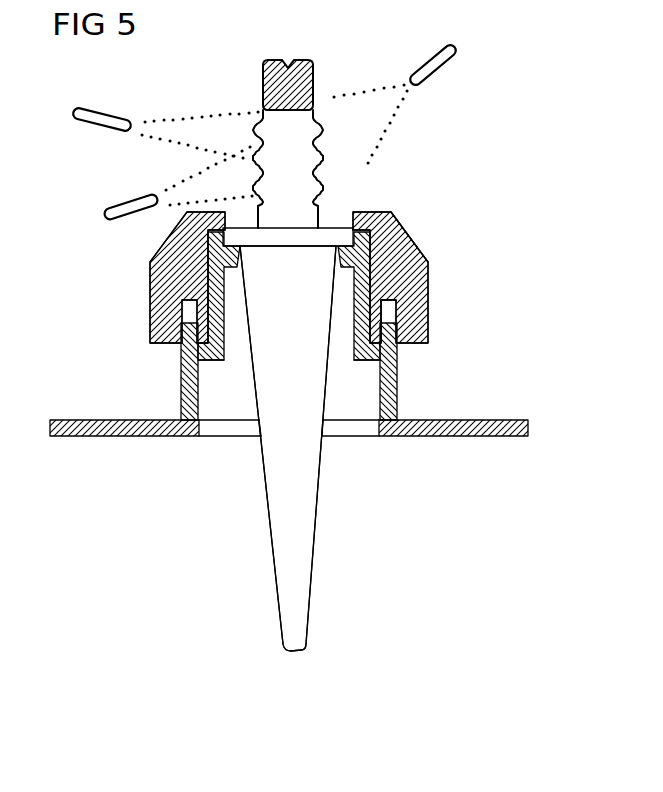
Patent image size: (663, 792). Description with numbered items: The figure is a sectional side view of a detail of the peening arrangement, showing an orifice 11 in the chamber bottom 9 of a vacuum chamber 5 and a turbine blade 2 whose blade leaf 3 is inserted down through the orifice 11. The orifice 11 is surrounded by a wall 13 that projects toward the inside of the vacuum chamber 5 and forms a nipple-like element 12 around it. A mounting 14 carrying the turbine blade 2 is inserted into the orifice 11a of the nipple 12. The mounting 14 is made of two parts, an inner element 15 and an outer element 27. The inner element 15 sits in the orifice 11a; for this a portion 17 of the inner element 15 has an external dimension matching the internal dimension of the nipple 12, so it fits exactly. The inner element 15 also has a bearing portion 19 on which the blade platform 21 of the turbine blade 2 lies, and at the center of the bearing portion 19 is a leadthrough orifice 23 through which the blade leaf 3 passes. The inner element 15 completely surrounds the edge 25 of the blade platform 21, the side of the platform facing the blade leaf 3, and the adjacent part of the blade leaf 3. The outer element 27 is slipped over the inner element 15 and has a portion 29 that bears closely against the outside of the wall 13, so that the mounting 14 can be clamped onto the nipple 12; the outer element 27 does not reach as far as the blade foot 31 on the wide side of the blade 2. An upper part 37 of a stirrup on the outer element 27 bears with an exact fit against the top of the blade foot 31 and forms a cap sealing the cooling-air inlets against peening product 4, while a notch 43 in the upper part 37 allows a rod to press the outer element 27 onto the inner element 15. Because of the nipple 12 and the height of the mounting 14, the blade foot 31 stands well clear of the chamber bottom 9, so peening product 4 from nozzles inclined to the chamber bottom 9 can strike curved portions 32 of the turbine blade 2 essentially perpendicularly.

The turbine blade 2 is at (343, 503).
The blade leaf 3 is at (303, 560).
The peening product 4 is at (187, 121).
The vacuum chamber 5 is at (432, 151).
The chamber bottom 9 is at (119, 437).
The orifice 11 is at (214, 431).
The orifice of the nipple 11a is at (362, 361).
The nipple-like element 12 is at (168, 377).
The wall 13 is at (398, 382).
The mounting 14 is at (453, 323).
The inner element 15 is at (366, 310).
The portion of the inner element 17 is at (211, 352).
The bearing portion 19 is at (404, 225).
The blade platform 21 is at (336, 227).
The leadthrough orifice 23 is at (284, 260).
The edge of the blade platform 25 is at (157, 256).
The outer element 27 is at (420, 276).
The portion of the outer element 29 is at (414, 345).
The blade foot 31 is at (311, 156).
The curved portions 32 is at (254, 155).
The upper part of the stirrup 37 is at (304, 84).
The notch 43 is at (289, 61).